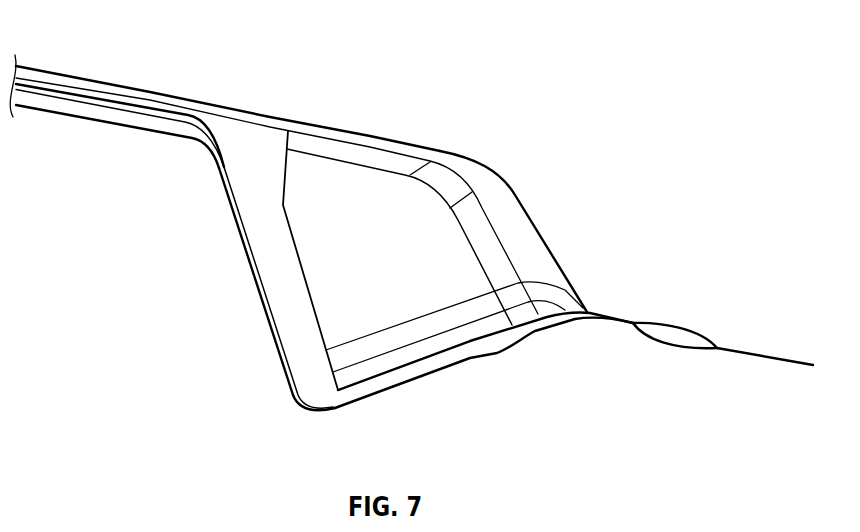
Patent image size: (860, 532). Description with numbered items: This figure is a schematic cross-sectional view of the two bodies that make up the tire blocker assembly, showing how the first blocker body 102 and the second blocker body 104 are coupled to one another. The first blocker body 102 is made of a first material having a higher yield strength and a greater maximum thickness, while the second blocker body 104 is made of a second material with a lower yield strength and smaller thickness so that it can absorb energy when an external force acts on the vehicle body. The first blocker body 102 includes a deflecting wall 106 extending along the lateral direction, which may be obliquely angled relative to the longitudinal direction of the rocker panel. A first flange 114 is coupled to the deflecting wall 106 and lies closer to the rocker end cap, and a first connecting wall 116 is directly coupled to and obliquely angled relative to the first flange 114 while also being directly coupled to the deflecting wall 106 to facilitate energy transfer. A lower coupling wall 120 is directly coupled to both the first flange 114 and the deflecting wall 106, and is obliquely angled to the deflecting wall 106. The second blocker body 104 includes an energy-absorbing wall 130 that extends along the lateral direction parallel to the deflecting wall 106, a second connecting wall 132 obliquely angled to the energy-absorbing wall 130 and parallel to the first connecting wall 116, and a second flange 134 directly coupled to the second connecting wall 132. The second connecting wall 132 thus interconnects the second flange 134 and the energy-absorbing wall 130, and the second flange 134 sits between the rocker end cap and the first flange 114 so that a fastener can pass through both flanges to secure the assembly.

The first blocker body 102 is at (298, 122).
The second blocker body 104 is at (239, 236).
The deflecting wall 106 is at (60, 74).
The first flange 114 is at (757, 356).
The first connecting wall 116 is at (538, 232).
The lower coupling wall 120 is at (364, 207).
The energy-absorbing wall 130 is at (58, 115).
The second connecting wall 132 is at (284, 367).
The second flange 134 is at (427, 374).